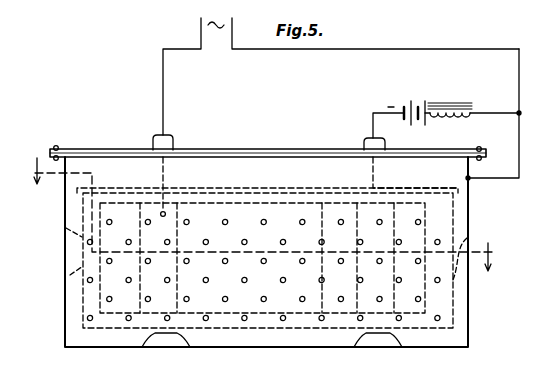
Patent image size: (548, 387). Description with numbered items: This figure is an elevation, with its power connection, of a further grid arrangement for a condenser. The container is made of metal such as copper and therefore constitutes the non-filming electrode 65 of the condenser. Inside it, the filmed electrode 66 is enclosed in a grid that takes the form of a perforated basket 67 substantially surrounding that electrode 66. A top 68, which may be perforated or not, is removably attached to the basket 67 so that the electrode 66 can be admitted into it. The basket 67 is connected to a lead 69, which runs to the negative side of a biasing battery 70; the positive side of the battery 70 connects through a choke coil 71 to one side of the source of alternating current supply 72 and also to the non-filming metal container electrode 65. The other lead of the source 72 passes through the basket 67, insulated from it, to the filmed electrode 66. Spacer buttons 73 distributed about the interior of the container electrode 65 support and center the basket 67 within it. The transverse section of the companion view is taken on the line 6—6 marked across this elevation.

The section line 6— 6 is at (264, 214).
The non-filming electrode 65 is at (468, 318).
The filmed electrode 66 is at (428, 336).
The perforated basket 67 is at (453, 218).
The top 68 is at (77, 190).
The lead 69 is at (373, 132).
The biasing battery 70 is at (402, 109).
The choke coil 71 is at (470, 110).
The source of alternating current supply 72 is at (207, 35).
The spacer buttons 73 is at (379, 335).